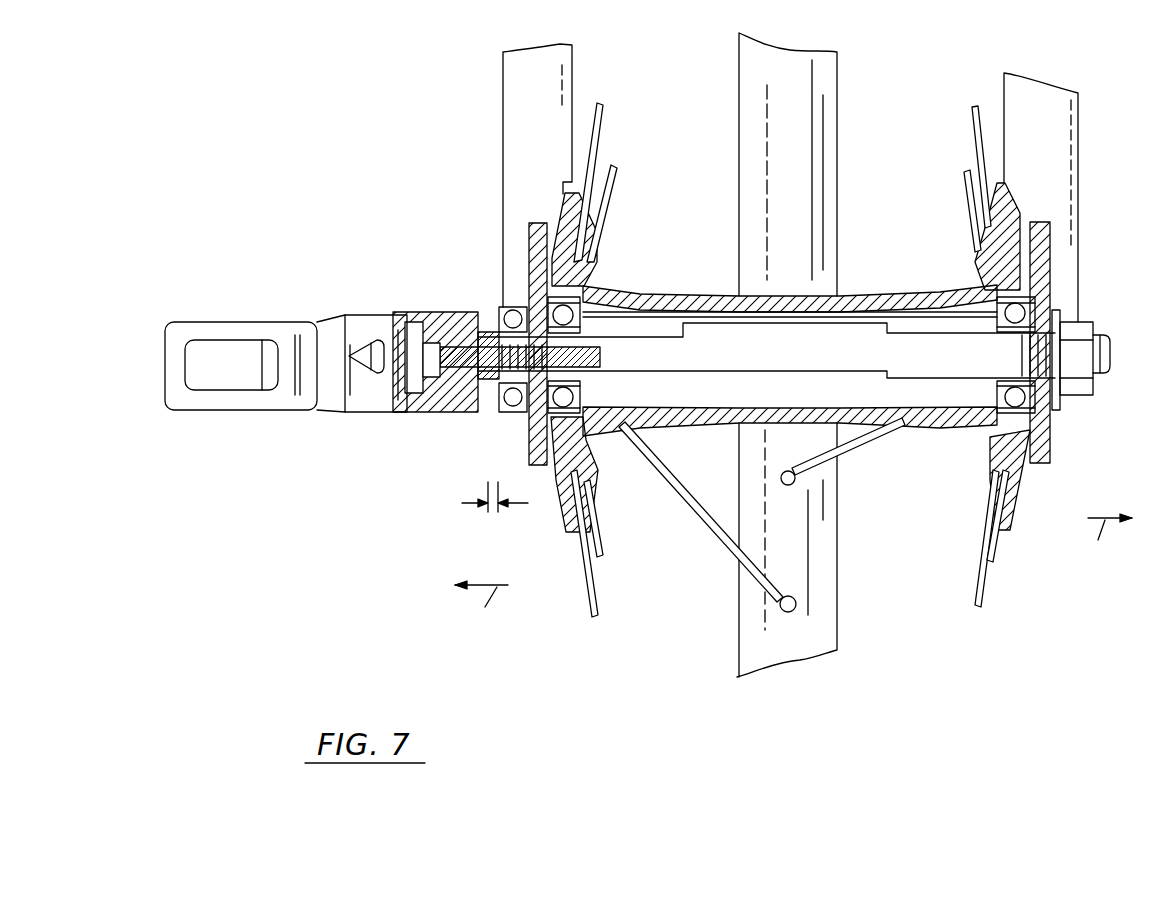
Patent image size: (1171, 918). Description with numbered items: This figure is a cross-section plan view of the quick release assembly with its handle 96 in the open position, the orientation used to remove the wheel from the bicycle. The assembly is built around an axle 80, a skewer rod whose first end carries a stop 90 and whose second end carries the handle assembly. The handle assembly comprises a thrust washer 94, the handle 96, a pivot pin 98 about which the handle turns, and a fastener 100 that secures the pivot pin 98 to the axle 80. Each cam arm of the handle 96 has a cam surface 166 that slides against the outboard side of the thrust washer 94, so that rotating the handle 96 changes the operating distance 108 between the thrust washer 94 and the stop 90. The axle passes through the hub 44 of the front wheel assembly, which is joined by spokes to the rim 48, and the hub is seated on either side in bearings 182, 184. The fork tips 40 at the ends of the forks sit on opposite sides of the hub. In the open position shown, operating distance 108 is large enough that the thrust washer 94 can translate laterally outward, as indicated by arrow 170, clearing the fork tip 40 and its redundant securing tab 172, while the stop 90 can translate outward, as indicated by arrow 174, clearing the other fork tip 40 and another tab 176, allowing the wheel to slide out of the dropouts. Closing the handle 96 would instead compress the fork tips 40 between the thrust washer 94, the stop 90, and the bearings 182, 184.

The fork tip 40 is at (546, 467).
The hub 44 is at (606, 436).
The rim 48 is at (828, 540).
The axle 80 is at (683, 340).
The stop 90 is at (1080, 328).
The thrust washer 94 is at (495, 413).
The handle 96 is at (263, 402).
The pivot pin 98 is at (417, 403).
The fastener 100 is at (433, 360).
The operating distance 108 is at (463, 505).
The cam surface 166 is at (490, 312).
The arrow 170 is at (483, 609).
The tab 172 is at (523, 418).
The arrow 174 is at (1106, 539).
The tab 176 is at (1062, 420).
The bearing 182 is at (577, 297).
The bearing 184 is at (1025, 300).